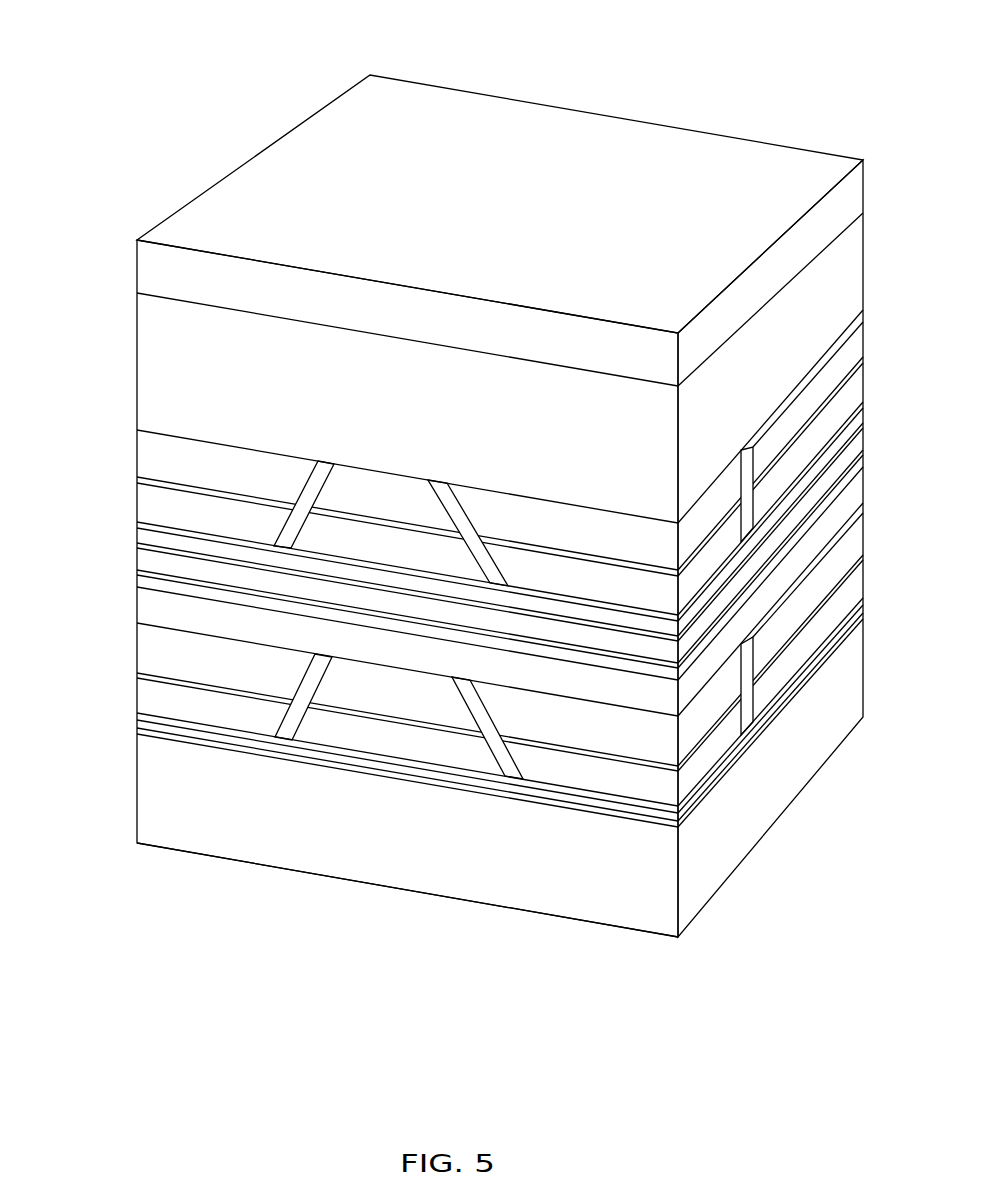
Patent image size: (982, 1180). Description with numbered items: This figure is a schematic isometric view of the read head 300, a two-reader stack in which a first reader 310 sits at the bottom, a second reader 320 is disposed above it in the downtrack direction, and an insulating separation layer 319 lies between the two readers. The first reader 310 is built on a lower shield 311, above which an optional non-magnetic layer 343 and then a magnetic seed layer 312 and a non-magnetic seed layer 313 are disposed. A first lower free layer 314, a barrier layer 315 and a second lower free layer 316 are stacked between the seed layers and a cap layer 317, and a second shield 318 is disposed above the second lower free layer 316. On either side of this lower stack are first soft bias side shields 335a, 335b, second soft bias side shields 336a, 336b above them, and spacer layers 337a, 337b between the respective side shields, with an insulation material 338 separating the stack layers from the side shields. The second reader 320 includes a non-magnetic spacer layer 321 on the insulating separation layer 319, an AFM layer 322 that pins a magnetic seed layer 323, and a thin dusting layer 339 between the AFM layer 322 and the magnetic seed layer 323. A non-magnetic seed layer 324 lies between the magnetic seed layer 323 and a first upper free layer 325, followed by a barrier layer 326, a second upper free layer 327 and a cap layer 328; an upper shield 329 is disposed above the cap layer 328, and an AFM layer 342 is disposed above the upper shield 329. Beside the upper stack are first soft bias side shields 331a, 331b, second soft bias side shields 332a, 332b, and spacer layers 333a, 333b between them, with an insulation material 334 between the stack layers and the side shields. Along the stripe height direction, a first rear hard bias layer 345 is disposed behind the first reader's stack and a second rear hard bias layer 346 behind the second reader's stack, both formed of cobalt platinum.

The read head 300 is at (130, 68).
The AFM layer 342 is at (440, 327).
The upper shield 329 is at (251, 362).
The insulation material 334 is at (312, 492).
The second rear hard bias layer 346 is at (806, 457).
The first rear hard bias layer 345 is at (808, 649).
The second reader 320 is at (306, 460).
The cap layer 328 is at (350, 470).
The second upper free layer 327 is at (385, 500).
The barrier layer 326 is at (408, 527).
The first upper free layer 325 is at (436, 545).
The non-magnetic seed layer 324 is at (453, 573).
The second soft bias side shield 332a is at (148, 460).
The spacer layer 333a is at (140, 483).
The first soft bias side shield 331a is at (247, 524).
The thin dusting layer 339 is at (145, 528).
The AFM layer 322 is at (145, 550).
The non-magnetic spacer layer 321 is at (145, 573).
The insulating separation layer 319 is at (145, 588).
The second soft bias side shield 332b is at (590, 515).
The spacer layer 333b is at (637, 540).
The first soft bias side shield 331b is at (655, 597).
The magnetic seed layer 323 is at (526, 592).
The insulation material 338 is at (323, 658).
The second shield 318 is at (644, 698).
The first reader 310 is at (299, 666).
The cap layer 317 is at (408, 680).
The second soft bias side shield 336a is at (250, 672).
The spacer layer 337a is at (145, 675).
The second lower free layer 316 is at (409, 704).
The first soft bias side shield 335a is at (250, 719).
The non-magnetic layer 343 is at (145, 730).
The second soft bias side shield 336b is at (655, 744).
The first soft bias side shield 335b is at (655, 787).
The barrier layer 315 is at (325, 708).
The first lower free layer 314 is at (362, 728).
The non-magnetic seed layer 313 is at (400, 752).
The magnetic seed layer 312 is at (455, 770).
The spacer layer 337b is at (548, 760).
The lower shield 311 is at (554, 884).